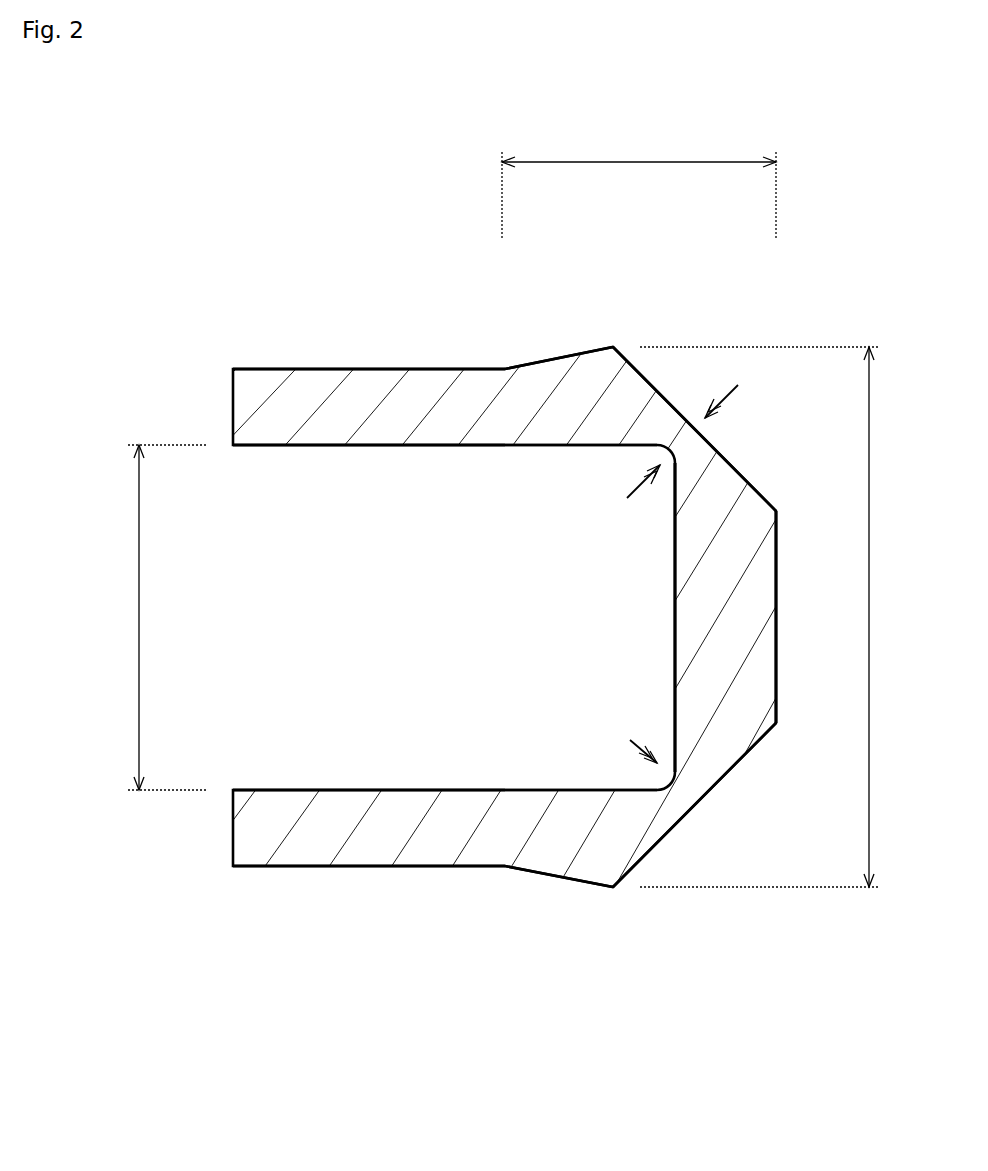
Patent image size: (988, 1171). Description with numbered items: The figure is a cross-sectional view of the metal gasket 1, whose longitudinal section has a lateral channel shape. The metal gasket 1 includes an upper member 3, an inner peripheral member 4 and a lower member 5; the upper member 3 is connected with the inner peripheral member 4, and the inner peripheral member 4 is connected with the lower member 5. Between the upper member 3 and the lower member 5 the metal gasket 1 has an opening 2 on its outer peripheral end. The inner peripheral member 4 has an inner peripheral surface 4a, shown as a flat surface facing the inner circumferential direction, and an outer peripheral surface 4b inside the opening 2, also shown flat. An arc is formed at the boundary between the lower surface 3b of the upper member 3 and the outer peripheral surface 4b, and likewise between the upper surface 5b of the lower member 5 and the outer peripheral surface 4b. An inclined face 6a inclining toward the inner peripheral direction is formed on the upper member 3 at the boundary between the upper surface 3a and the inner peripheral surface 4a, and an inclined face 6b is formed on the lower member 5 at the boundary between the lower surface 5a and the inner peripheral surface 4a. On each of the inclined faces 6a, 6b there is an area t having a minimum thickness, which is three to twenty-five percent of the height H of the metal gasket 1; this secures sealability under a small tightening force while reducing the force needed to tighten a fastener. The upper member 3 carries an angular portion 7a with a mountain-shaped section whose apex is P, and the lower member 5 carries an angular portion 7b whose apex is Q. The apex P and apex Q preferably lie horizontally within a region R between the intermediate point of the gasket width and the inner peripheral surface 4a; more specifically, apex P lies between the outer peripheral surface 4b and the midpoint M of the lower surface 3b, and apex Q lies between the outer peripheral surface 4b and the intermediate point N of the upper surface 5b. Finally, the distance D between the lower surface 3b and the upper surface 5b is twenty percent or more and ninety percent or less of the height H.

The metal gasket 1 is at (826, 281).
The opening 2 is at (248, 630).
The upper member 3 is at (333, 378).
The upper surface of the upper member 3a is at (408, 369).
The lower surface of the upper member 3b is at (320, 447).
The inner peripheral member 4 is at (760, 655).
The inner peripheral surface 4a is at (776, 572).
The outer peripheral surface 4b is at (675, 580).
The lower member 5 is at (334, 858).
The lower surface of the lower member 5a is at (408, 867).
The upper surface of the lower member 5b is at (325, 789).
The inclined face 6a is at (752, 452).
The inclined face 6b is at (702, 810).
The angular portion 7a is at (565, 353).
The angular portion 7b is at (565, 873).
The apex P is at (617, 338).
The apex Q is at (620, 893).
The midpoint of the lower surface of the upper member M is at (455, 448).
The intermediate point of the upper surface of the lower member N is at (455, 787).
The area having a minimum thickness t is at (740, 388).
The region R is at (627, 161).
The distance D is at (138, 617).
The height H is at (870, 618).